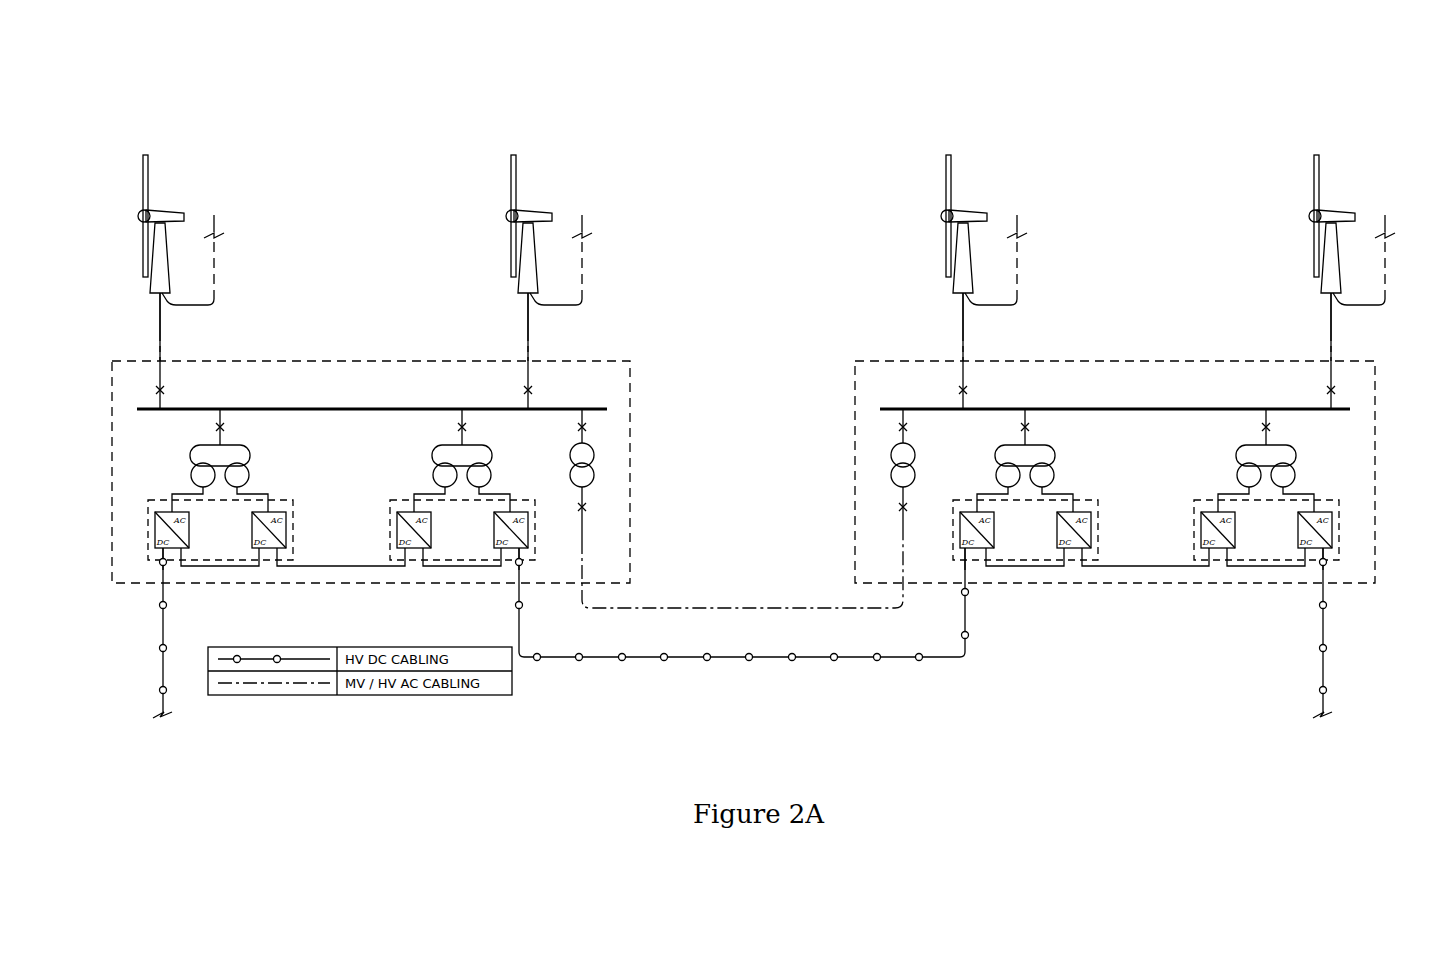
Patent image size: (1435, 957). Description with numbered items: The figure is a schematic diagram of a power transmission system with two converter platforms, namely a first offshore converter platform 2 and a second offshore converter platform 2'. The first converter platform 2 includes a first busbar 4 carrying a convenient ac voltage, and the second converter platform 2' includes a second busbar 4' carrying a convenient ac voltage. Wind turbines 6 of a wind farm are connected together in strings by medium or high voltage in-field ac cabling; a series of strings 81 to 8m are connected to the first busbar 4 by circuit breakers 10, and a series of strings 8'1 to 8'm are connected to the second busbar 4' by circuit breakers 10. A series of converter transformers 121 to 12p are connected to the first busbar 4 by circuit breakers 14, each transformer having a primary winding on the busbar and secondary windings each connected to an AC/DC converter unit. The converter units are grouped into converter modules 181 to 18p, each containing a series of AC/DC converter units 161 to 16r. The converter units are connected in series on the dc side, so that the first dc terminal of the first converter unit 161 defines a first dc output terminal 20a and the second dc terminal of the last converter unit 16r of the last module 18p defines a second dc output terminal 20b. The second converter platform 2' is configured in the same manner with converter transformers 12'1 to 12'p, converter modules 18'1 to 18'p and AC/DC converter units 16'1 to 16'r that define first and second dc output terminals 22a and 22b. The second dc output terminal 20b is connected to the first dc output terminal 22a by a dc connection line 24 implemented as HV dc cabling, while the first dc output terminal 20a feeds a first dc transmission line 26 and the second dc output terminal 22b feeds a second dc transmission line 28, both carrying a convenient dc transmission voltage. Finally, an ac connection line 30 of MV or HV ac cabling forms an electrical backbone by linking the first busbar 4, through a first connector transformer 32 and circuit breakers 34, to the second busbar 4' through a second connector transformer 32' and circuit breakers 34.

The first offshore converter platform 2 is at (371, 421).
The second offshore converter platform 2' is at (1115, 520).
The first busbar 4 is at (372, 355).
The second busbar 4' is at (1115, 349).
The wind turbine 6 is at (168, 181).
The first string 81 is at (160, 322).
The m-th string 8m is at (528, 322).
The first string of second platform 8'1 is at (914, 311).
The m-th string of second platform 8'm is at (1283, 312).
The circuit breaker 10 is at (152, 390).
The first converter transformer 121 is at (252, 447).
The p-th converter transformer 12p is at (438, 447).
The first converter transformer of second platform 12'1 is at (1046, 419).
The p-th converter transformer of second platform 12'p is at (1266, 419).
The circuit breaker 14 is at (212, 427).
The first AC/DC converter unit 161 is at (172, 512).
The r-th AC/DC converter unit 16r is at (270, 512).
The first AC/DC converter unit of second platform 16'1 is at (1131, 510).
The r-th AC/DC converter unit of second platform 16'r is at (1220, 506).
The first converter module 181 is at (222, 562).
The p-th converter module 18p is at (475, 562).
The first converter module of second platform 18'1 is at (1108, 597).
The p-th converter module of second platform 18'p is at (1239, 614).
The first dc output terminal 20a is at (150, 557).
The second dc output terminal 20b is at (534, 560).
The first dc output terminal of second platform 22a is at (958, 560).
The second dc output terminal of second platform 22b is at (1337, 560).
The dc connection line 24 is at (797, 660).
The first dc transmission line 26 is at (165, 668).
The second dc transmission line 28 is at (1323, 648).
The ac connection line 30 is at (742, 608).
The first connector transformer 32 is at (635, 474).
The second connector transformer 32' is at (852, 474).
The circuit breaker 34 is at (594, 427).